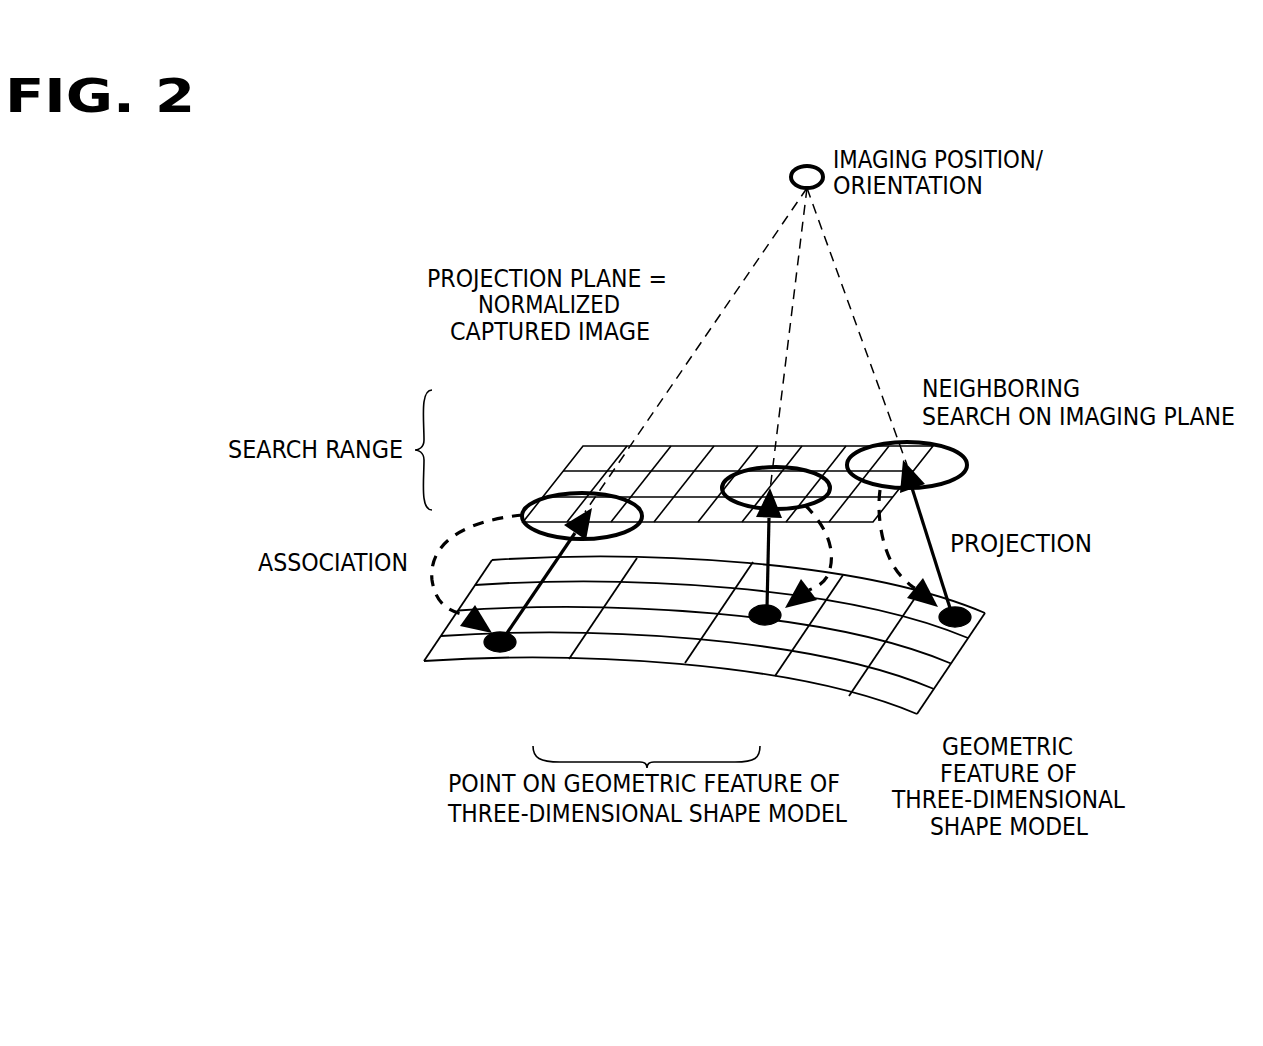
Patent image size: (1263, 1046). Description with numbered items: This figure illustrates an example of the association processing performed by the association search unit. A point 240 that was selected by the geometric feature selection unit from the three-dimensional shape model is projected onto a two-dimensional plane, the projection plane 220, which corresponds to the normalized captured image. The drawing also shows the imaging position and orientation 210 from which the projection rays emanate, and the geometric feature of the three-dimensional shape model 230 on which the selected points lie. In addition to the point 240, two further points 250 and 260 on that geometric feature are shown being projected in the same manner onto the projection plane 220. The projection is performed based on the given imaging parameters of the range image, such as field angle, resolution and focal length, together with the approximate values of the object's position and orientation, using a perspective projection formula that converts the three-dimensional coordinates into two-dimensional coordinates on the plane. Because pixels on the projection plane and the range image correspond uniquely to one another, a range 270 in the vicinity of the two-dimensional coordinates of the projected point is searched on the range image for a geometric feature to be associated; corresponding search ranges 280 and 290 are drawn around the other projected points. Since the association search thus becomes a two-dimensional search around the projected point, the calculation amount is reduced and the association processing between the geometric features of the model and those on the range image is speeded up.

The imaging position/orientation 210 is at (790, 177).
The two-dimensional plane (projection plane) 220 is at (606, 449).
The geometric feature of three-dimensional shape model 230 is at (906, 691).
The point 240 is at (505, 652).
The point on geometric feature of three-dimensional shape model 250 is at (765, 621).
The point on geometric feature of three-dimensional shape model 260 is at (955, 622).
The range 270 is at (530, 508).
The search range 280 is at (719, 486).
The search range 290 is at (845, 455).